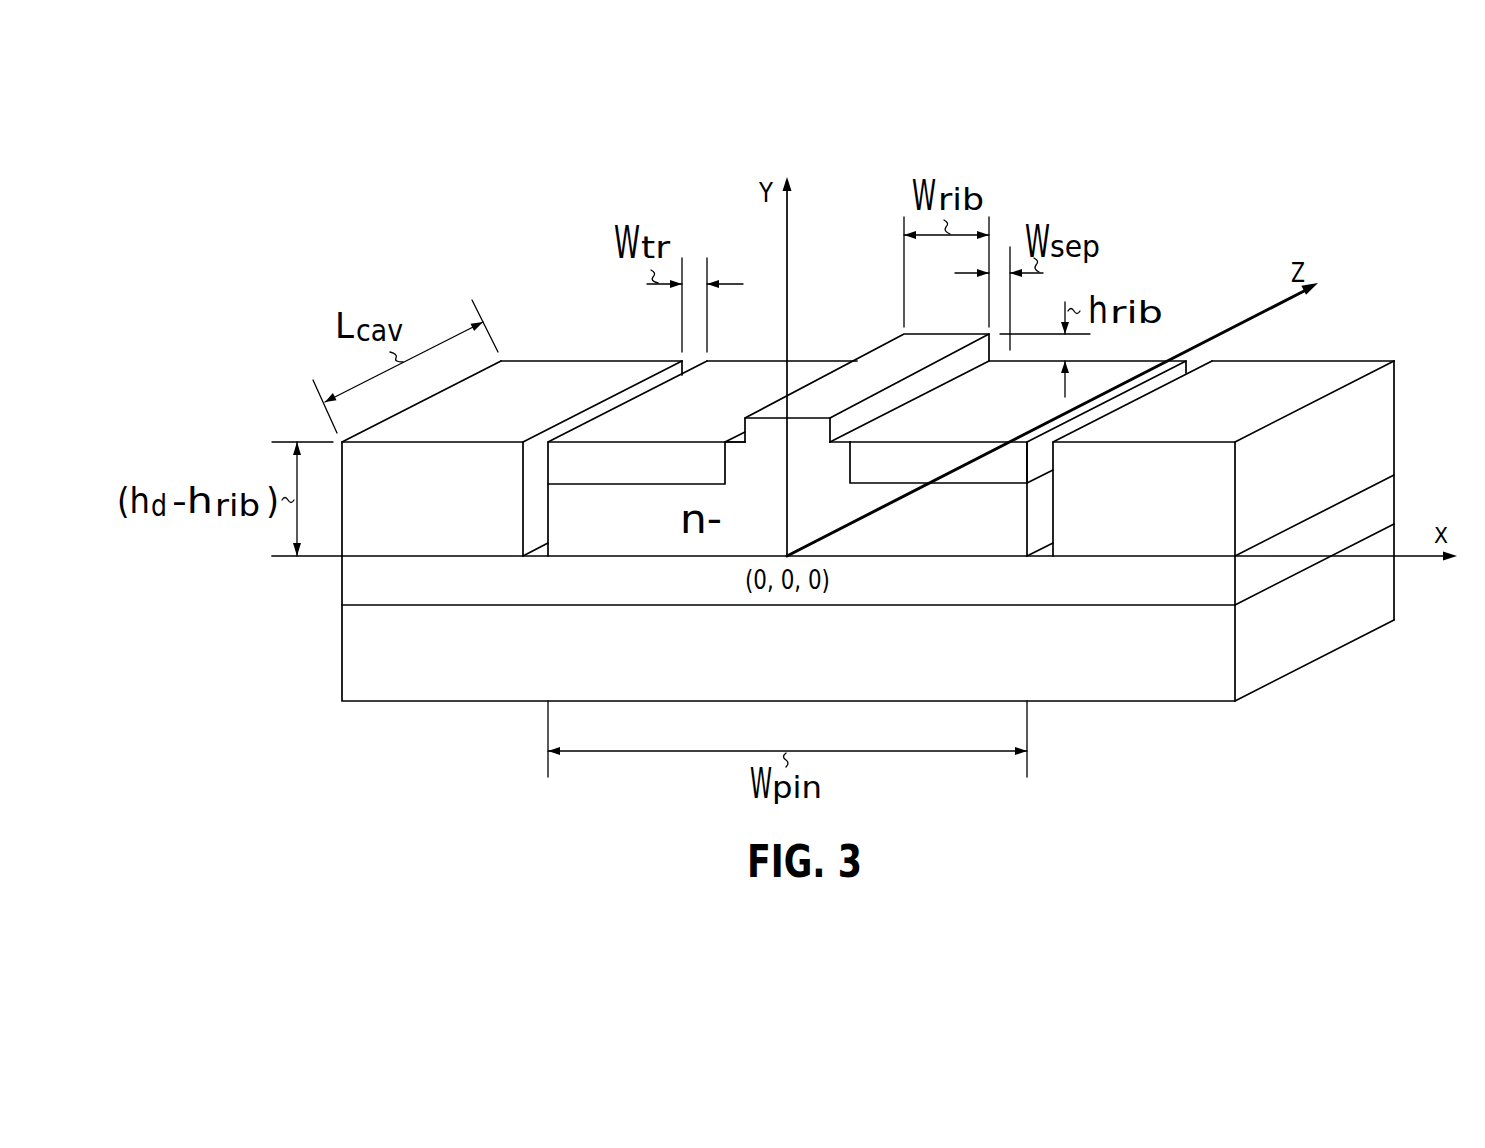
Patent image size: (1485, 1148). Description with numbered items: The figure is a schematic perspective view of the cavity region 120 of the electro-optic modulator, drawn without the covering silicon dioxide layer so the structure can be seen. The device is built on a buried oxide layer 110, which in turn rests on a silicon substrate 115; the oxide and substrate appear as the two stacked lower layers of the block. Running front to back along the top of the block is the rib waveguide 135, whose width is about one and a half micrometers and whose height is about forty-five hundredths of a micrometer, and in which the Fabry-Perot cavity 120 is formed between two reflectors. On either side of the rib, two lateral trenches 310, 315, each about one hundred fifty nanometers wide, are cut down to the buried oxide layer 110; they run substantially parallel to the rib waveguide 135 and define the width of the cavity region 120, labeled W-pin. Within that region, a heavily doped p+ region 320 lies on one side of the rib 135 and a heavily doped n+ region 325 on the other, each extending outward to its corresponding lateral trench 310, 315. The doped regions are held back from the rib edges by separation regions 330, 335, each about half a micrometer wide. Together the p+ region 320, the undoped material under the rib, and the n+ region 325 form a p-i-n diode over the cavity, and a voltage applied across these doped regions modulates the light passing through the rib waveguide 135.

The cavity region 120 is at (1237, 206).
The buried oxide layer 110 is at (1396, 500).
The silicon substrate 115 is at (1396, 595).
The rib waveguide 135 is at (898, 345).
The lateral trench 310 is at (657, 382).
The lateral trench 315 is at (1143, 391).
The p+ region 320 is at (733, 362).
The n+ region 325 is at (1127, 372).
The separation region 330 is at (728, 444).
The separation region 335 is at (838, 444).